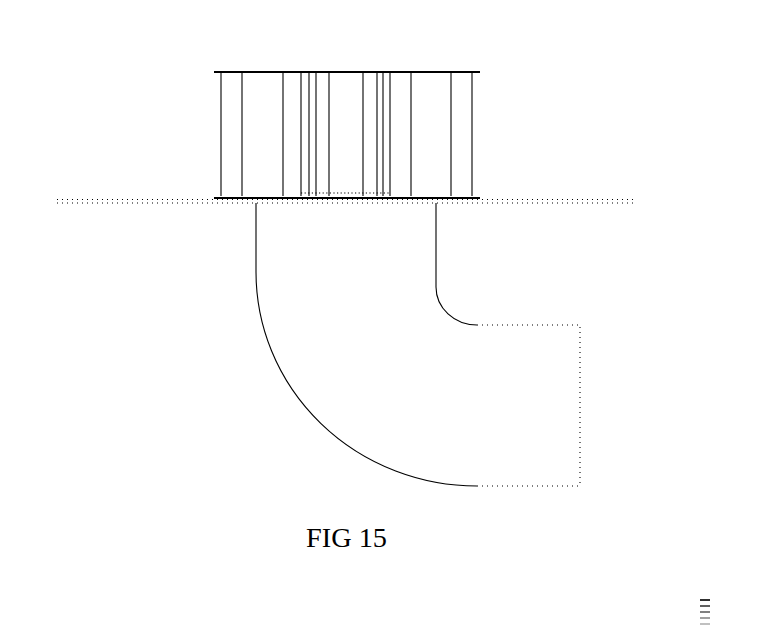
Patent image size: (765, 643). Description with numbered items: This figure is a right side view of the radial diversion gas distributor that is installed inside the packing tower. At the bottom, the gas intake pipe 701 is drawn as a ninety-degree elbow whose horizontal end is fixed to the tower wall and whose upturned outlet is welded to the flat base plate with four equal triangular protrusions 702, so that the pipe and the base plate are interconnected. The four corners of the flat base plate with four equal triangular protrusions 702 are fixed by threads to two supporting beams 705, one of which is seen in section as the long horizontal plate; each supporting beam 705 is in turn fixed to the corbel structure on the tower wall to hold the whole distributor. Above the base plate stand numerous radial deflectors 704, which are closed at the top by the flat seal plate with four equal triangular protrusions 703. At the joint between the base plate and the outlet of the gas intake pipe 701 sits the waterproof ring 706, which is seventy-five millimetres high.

The gas intake pipe 701 is at (313, 372).
The flat base plate with four equal triangular protrusions 702 is at (493, 265).
The flat seal plate with four equal triangular protrusions 703 is at (448, 27).
The radial deflectors 704 is at (546, 138).
The supporting beam 705 is at (128, 290).
The waterproof ring 706 is at (362, 258).